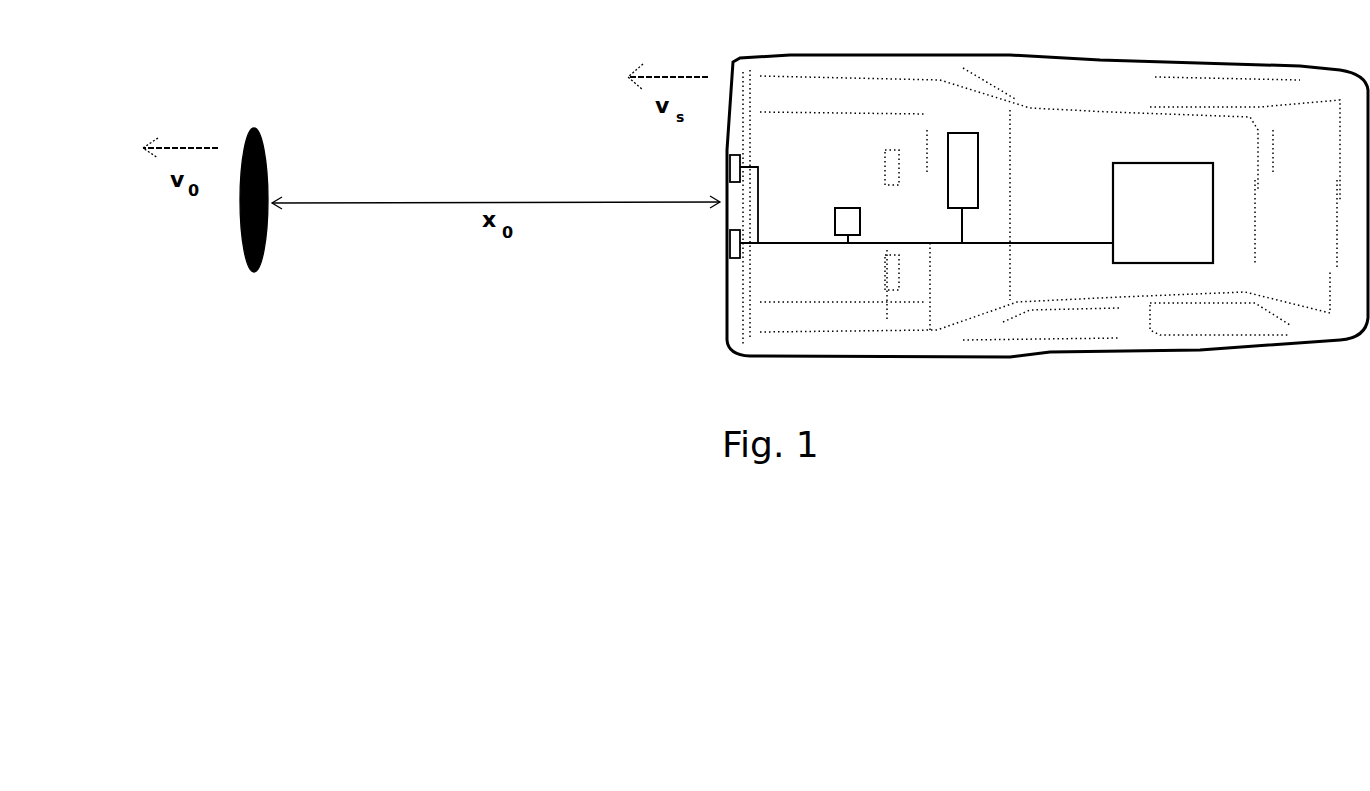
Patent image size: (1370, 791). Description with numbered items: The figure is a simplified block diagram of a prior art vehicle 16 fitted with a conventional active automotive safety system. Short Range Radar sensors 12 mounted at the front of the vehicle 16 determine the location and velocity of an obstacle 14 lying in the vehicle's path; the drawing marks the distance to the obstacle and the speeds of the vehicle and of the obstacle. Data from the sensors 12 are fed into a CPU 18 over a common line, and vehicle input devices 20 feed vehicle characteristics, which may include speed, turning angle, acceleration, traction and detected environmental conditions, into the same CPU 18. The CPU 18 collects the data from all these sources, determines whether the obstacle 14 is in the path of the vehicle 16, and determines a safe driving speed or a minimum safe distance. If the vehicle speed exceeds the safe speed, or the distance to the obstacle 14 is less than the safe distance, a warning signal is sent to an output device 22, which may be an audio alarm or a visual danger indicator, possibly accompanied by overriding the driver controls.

The Short Range Radar (SRR) sensors 12 is at (728, 165).
The obstacle 14 is at (266, 160).
The vehicle 16 is at (1163, 60).
The CPU 18 is at (1120, 163).
The vehicle input devices 20 is at (848, 208).
The output device 22 is at (972, 110).